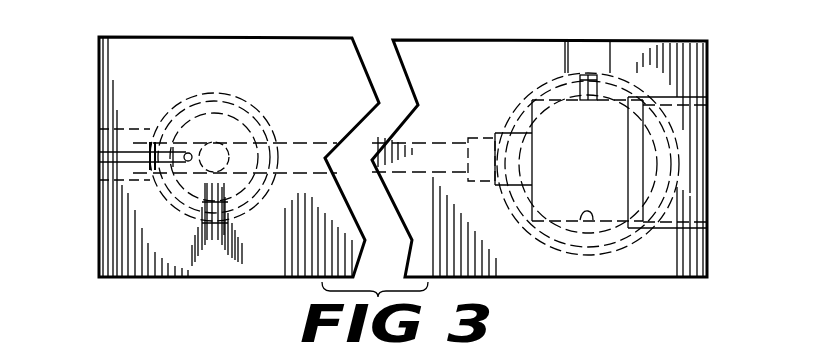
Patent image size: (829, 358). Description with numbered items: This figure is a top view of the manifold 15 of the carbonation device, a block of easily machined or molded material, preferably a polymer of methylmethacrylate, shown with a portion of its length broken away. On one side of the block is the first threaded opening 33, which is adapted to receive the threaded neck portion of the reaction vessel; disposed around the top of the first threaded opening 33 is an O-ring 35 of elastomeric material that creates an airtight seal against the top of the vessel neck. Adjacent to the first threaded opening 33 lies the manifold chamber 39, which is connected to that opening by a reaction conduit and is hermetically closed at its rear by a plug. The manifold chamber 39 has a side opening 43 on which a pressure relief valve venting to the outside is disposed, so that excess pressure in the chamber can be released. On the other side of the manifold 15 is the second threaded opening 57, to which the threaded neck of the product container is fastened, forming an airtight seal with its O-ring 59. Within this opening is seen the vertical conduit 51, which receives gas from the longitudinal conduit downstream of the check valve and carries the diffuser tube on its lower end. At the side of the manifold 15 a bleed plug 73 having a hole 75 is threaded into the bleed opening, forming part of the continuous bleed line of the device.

The manifold 15 is at (352, 57).
The first threaded opening 33 is at (552, 83).
The O-ring 35 is at (515, 117).
The manifold chamber 39 is at (593, 221).
The side opening 43 is at (607, 58).
The vertical conduit 51 is at (209, 145).
The second threaded opening 57 is at (200, 86).
The O-ring 59 is at (270, 119).
The bleed plug 73 is at (102, 145).
The hole 75 is at (102, 155).